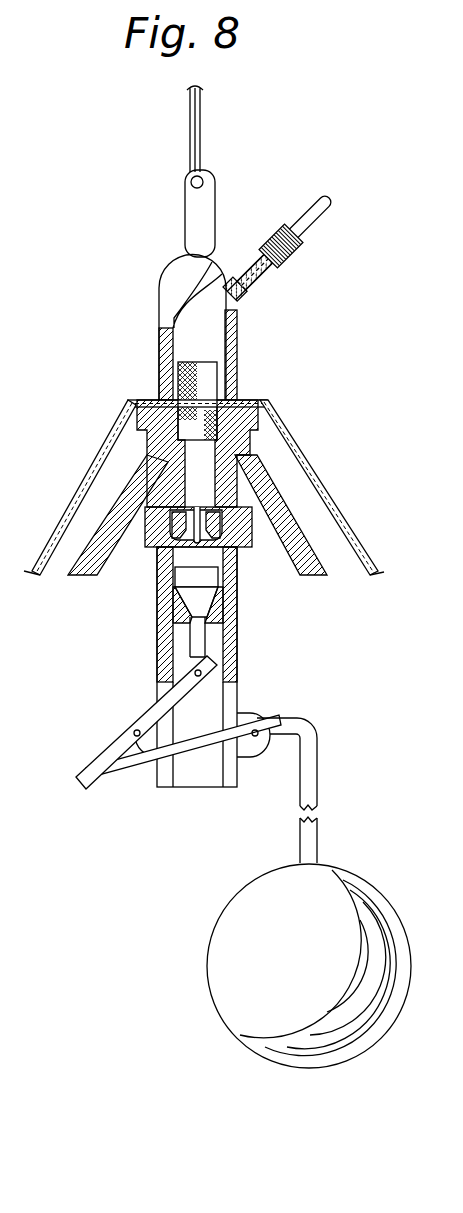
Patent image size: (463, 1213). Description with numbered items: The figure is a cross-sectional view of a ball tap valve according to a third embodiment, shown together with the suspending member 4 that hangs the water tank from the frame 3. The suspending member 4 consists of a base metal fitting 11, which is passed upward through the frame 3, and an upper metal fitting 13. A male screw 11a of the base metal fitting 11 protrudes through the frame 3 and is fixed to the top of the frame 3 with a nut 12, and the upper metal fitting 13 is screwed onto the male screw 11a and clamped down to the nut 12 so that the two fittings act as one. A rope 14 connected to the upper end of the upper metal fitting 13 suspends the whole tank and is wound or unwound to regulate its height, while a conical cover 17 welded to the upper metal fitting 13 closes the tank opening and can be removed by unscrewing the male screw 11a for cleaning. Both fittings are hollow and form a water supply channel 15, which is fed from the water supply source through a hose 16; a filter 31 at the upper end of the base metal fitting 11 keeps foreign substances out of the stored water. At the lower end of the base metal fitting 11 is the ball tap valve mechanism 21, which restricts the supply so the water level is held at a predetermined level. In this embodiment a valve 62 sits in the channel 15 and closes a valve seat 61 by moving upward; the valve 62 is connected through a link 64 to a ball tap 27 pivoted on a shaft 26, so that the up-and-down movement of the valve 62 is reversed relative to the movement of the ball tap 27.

The rope 14 is at (188, 118).
The hose 16 is at (317, 227).
The filter 31 is at (197, 362).
The suspending member 4 is at (150, 332).
The water supply channel 15 is at (212, 347).
The upper metal fitting 13 is at (238, 370).
The male screw 11a is at (130, 403).
The nut 12 is at (252, 447).
The base metal fitting 11 is at (147, 487).
The frame 3 is at (287, 507).
The conical cover 17 is at (352, 537).
The valve seat 61 is at (180, 550).
The valve 62 is at (222, 588).
The ball tap valve mechanism 21 is at (250, 645).
The link 64 is at (113, 750).
The shaft 26 is at (265, 745).
The ball tap 27 is at (218, 970).